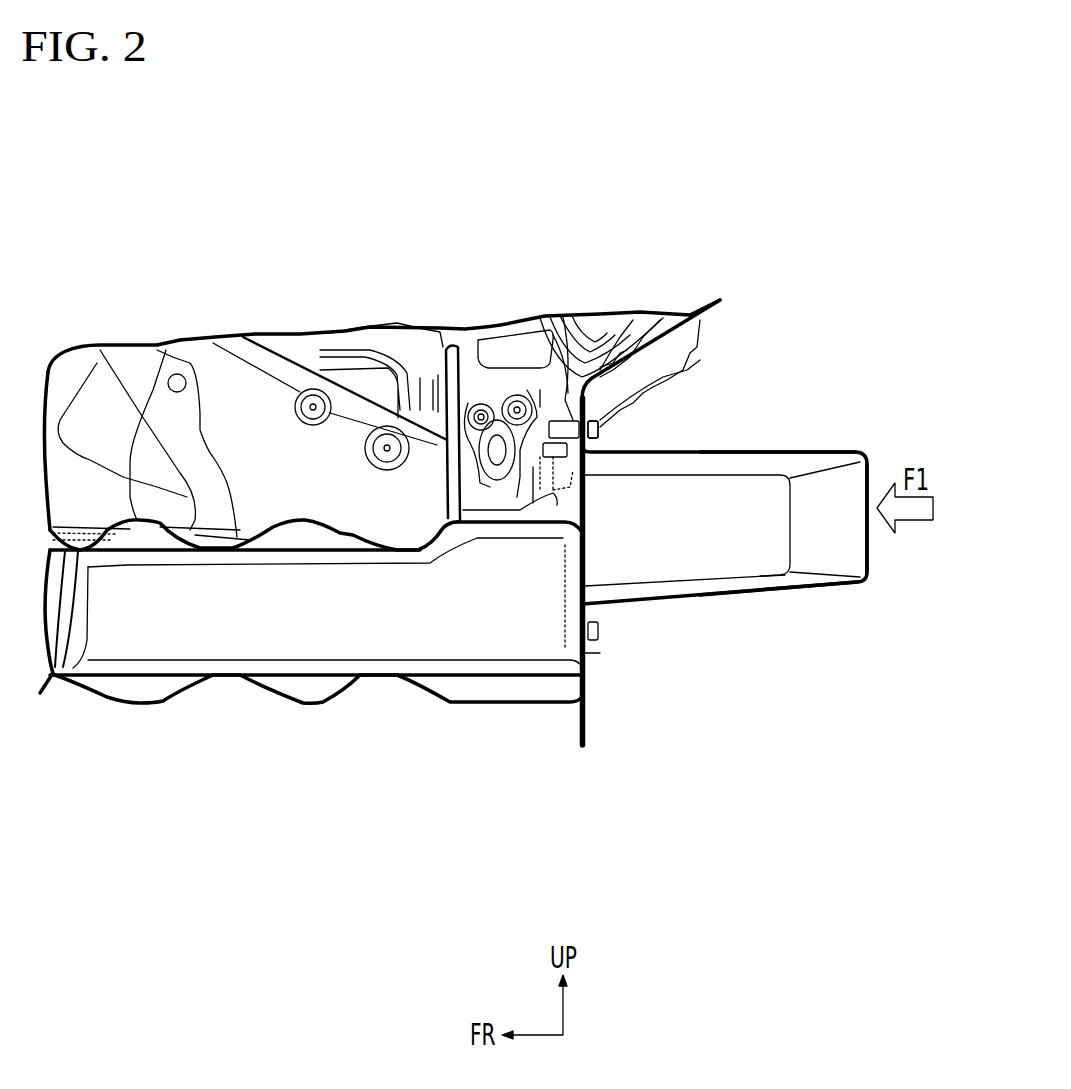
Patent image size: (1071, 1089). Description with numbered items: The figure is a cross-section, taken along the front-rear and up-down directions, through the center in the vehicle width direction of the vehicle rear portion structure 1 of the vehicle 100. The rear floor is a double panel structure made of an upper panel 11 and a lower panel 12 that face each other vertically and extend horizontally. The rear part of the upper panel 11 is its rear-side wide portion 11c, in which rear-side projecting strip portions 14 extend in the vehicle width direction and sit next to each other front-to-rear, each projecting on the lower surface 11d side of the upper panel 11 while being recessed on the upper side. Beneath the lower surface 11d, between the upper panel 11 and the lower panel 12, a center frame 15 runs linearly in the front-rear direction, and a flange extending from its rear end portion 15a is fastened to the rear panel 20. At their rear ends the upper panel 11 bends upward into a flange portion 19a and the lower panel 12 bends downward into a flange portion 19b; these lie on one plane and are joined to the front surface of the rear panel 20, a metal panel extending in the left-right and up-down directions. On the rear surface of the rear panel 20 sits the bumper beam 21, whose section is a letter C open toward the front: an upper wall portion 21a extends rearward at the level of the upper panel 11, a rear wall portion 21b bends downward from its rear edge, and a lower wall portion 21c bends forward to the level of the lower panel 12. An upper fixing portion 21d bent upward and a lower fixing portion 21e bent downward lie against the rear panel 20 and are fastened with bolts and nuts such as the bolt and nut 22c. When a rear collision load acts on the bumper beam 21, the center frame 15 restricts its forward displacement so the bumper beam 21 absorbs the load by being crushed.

The vehicle 100 is at (462, 264).
The vehicle rear portion structure 1 is at (488, 306).
The upper panel 11 is at (314, 519).
The rear-side wide portion 11c is at (230, 530).
The lower surface 11d is at (390, 550).
The lower panel 12 is at (483, 706).
The rear-side projecting strip portion 14 is at (166, 348).
The center frame 15 is at (327, 708).
The rear end portion 15a is at (540, 590).
The flange portion 19a is at (588, 503).
The flange portion 19b is at (585, 720).
The rear panel 20 is at (588, 535).
The bumper beam 21 is at (872, 466).
The upper wall portion 21a is at (780, 452).
The rear wall portion 21b is at (865, 553).
The lower wall portion 21c is at (702, 601).
The upper fixing portion 21d is at (592, 423).
The lower fixing portion 21e is at (590, 653).
The bolt and nut 22c is at (625, 455).